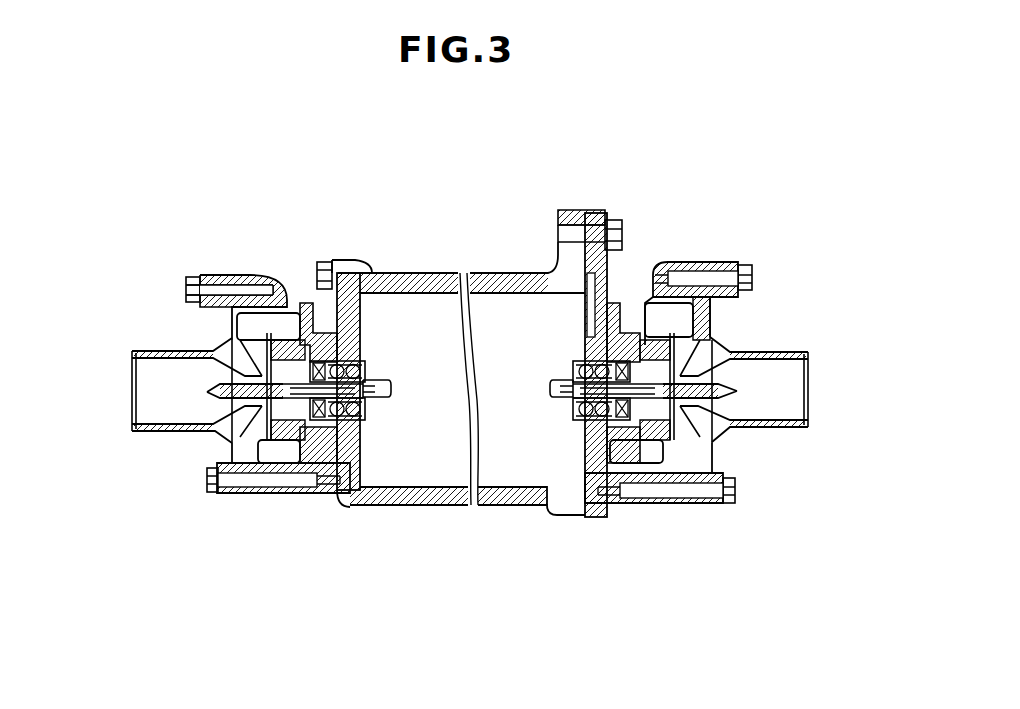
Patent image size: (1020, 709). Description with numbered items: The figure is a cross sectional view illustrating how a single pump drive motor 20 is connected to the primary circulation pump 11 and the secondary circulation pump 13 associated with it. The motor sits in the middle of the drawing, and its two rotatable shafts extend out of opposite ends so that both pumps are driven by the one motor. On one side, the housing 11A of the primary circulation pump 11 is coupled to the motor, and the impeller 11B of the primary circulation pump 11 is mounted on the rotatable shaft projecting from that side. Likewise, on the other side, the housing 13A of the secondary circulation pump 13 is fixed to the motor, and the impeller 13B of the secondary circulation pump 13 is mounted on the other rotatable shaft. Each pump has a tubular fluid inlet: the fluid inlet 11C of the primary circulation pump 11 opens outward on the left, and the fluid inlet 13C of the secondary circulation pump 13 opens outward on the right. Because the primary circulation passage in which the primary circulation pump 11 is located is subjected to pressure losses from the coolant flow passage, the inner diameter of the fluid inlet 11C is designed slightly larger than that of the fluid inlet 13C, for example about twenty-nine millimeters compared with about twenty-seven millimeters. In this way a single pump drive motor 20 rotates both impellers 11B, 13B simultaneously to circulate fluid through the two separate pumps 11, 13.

The primary circulation pump 11 is at (211, 381).
The housing of the primary circulation pump 11A is at (280, 495).
The impeller of the primary circulation pump 11B is at (236, 436).
The fluid inlet of the primary circulation pump 11C is at (140, 394).
The secondary circulation pump 13 is at (716, 374).
The housing of the secondary circulation pump 13A is at (668, 503).
The impeller of the secondary circulation pump 13B is at (700, 430).
The fluid inlet of the secondary circulation pump 13C is at (798, 393).
The single pump drive motor 20 is at (434, 273).